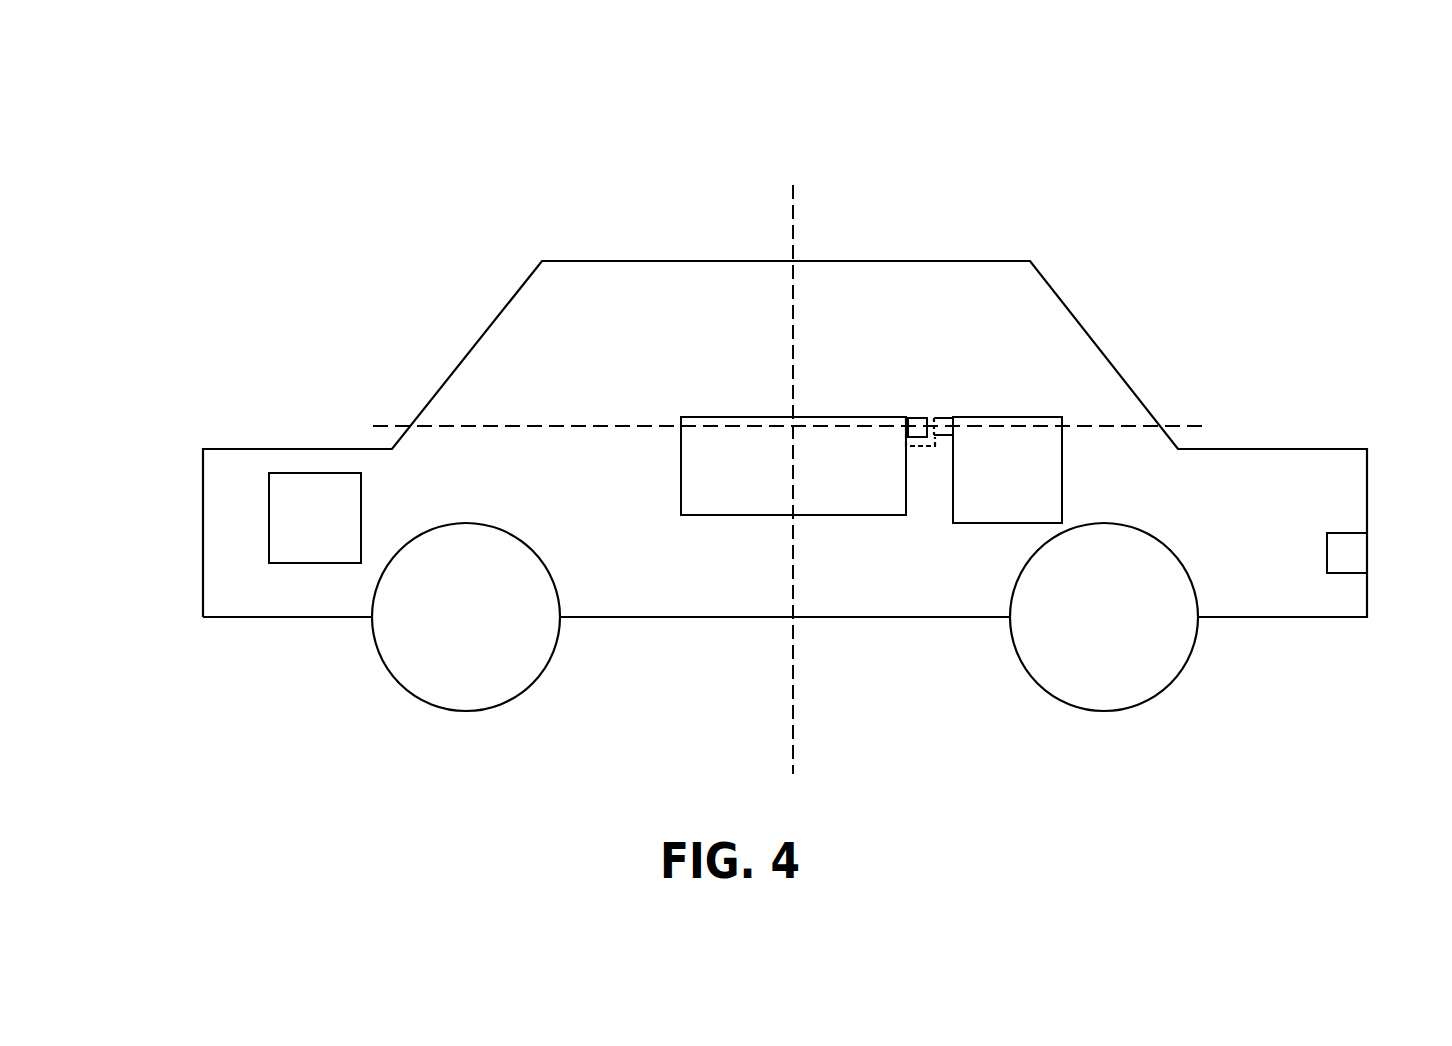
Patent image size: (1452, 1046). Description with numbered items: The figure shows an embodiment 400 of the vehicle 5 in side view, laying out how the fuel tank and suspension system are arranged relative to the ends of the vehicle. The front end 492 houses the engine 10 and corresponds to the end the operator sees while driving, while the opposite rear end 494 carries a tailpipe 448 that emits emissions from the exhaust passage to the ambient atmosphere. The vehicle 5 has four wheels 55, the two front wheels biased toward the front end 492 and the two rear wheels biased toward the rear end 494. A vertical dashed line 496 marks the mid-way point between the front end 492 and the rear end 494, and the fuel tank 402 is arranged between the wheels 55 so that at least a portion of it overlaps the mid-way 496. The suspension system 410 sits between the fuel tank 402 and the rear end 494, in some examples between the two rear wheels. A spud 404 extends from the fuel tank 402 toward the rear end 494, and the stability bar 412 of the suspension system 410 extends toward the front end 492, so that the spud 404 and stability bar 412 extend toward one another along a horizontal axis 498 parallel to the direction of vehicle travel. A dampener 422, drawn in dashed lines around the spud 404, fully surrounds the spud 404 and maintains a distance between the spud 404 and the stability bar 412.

The embodiment of the vehicle 400 is at (1235, 73).
The vehicle 5 is at (1030, 261).
The wheels 55 is at (480, 629).
The engine 10 is at (328, 529).
The fuel tank 402 is at (766, 480).
The spud 404 is at (912, 416).
The suspension system 410 is at (1042, 417).
The stability bar 412 is at (945, 412).
The dampener 422 is at (937, 444).
The tailpipe 448 is at (1355, 533).
The front end 492 is at (148, 424).
The rear end 494 is at (1397, 422).
The dashed line (mid-way) 496 is at (793, 213).
The horizontal axis 498 is at (1183, 426).